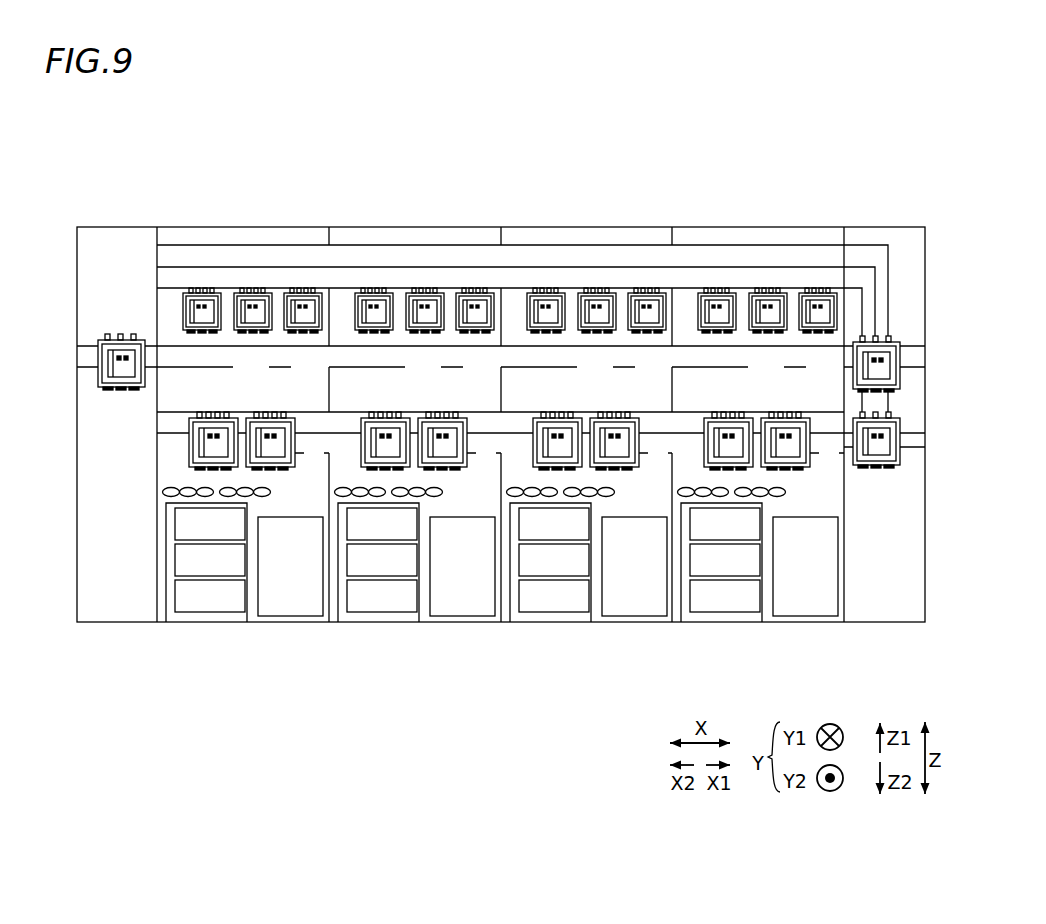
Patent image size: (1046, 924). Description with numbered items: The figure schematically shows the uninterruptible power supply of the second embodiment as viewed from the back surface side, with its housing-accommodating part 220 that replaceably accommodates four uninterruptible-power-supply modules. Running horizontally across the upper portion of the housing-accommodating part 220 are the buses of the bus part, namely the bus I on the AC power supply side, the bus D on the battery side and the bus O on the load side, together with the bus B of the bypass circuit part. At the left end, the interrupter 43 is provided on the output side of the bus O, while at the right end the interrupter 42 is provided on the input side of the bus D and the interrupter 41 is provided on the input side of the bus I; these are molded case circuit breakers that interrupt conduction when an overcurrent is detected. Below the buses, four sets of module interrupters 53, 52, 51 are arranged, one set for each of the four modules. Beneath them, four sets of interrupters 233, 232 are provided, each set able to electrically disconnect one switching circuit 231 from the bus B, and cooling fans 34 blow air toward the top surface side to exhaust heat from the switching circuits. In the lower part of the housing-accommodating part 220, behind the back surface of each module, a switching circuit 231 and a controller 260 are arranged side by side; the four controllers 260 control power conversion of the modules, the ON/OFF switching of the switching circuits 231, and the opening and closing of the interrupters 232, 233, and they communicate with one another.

The housing-accommodating part 220 is at (126, 225).
The interrupter 53 is at (195, 283).
The interrupter 52 is at (251, 283).
The interrupter 51 is at (300, 283).
The bus D is at (827, 258).
The bus I is at (832, 279).
The interrupter 233 is at (217, 407).
The interrupter 232 is at (277, 407).
The cooling fan 34 is at (270, 488).
The switching circuit 231 is at (200, 619).
The controller 260 is at (292, 619).
The interrupter 43 is at (110, 401).
The interrupter 42 is at (903, 372).
The interrupter 41 is at (903, 450).
The bus O is at (177, 368).
The bus B is at (178, 434).